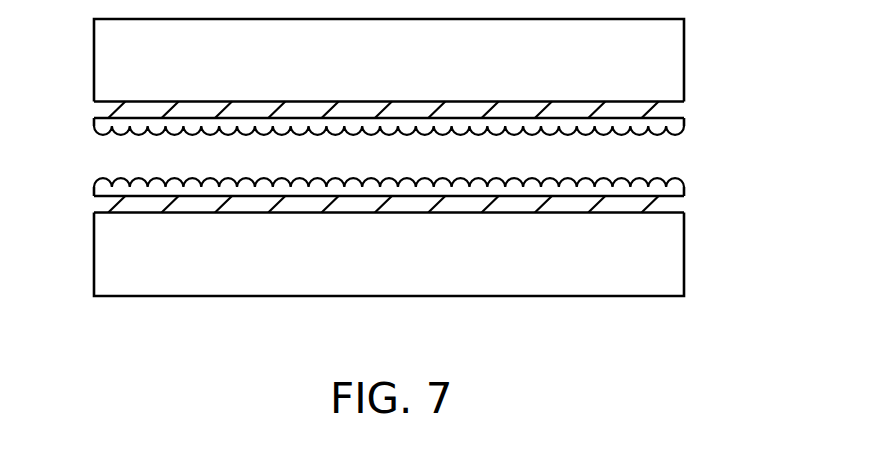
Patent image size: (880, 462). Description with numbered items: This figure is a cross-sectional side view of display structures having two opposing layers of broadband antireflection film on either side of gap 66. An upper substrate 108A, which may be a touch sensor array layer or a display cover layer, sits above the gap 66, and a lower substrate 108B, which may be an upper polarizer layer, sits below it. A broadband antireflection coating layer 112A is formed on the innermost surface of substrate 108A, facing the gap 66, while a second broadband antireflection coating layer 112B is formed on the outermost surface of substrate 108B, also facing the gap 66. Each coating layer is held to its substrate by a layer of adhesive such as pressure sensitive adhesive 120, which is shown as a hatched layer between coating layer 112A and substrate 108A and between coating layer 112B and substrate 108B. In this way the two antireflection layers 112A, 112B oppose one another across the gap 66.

The gap 66 is at (96, 160).
The substrate 108A is at (684, 43).
The substrate 108B is at (684, 265).
The broadband antireflection coating layer 112A is at (677, 127).
The broadband antireflection coating layer 112B is at (678, 187).
The pressure sensitive adhesive 120 is at (675, 110).